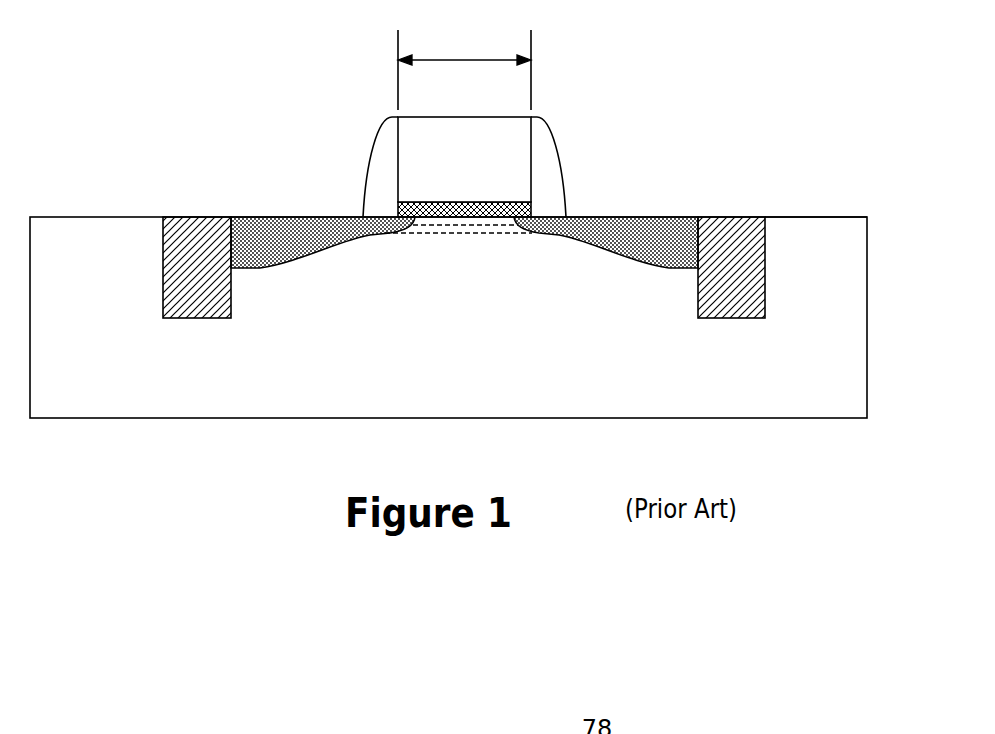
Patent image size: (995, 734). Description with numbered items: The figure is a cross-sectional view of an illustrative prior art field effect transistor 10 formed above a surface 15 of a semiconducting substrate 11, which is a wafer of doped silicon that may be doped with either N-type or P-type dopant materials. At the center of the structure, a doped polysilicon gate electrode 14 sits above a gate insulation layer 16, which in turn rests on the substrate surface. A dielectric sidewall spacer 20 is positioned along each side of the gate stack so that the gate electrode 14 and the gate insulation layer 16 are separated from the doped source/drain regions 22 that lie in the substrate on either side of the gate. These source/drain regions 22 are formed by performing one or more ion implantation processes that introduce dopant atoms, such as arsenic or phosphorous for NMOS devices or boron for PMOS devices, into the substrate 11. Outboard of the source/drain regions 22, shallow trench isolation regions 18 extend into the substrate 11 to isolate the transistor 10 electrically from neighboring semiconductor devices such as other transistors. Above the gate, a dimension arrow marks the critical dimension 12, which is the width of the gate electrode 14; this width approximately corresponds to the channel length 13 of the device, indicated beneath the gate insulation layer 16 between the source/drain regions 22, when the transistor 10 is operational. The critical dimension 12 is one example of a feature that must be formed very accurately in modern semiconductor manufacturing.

The field effect transistor 10 is at (363, 92).
The semiconducting substrate 11 is at (763, 393).
The critical dimension 12 is at (467, 60).
The channel length 13 is at (463, 235).
The gate electrode 14 is at (498, 152).
The surface 15 is at (823, 218).
The gate insulation layer 16 is at (530, 200).
The shallow trench isolation regions 18 is at (207, 252).
The dielectric sidewall spacer 20 is at (382, 168).
The source/drain regions 22 is at (303, 230).